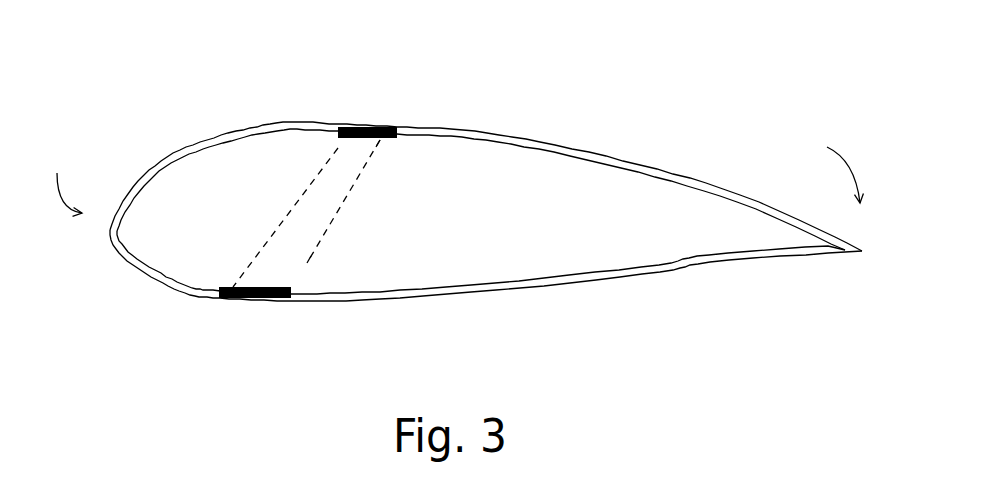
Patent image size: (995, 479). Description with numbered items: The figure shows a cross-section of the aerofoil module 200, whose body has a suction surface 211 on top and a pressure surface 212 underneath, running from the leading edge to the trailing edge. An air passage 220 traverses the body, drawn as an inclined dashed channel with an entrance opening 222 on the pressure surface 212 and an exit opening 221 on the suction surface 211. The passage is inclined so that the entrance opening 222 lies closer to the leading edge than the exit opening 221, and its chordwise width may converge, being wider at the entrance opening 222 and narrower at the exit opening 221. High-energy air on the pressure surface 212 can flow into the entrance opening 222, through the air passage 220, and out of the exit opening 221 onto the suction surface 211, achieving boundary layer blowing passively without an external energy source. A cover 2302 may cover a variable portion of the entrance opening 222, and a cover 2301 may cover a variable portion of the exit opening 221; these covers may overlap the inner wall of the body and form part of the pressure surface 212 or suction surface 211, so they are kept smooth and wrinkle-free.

The aerofoil module 200 is at (202, 40).
The suction surface 211 is at (492, 135).
The pressure surface 212 is at (402, 299).
The air passage 220 is at (330, 226).
The exit opening 221 is at (374, 116).
The entrance opening 222 is at (248, 303).
The cover 2301 is at (366, 143).
The cover 2302 is at (275, 287).